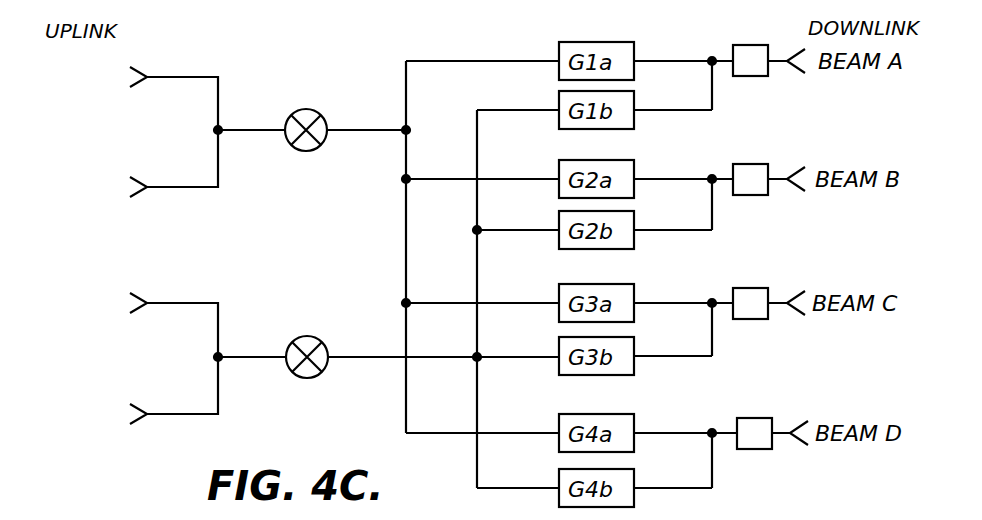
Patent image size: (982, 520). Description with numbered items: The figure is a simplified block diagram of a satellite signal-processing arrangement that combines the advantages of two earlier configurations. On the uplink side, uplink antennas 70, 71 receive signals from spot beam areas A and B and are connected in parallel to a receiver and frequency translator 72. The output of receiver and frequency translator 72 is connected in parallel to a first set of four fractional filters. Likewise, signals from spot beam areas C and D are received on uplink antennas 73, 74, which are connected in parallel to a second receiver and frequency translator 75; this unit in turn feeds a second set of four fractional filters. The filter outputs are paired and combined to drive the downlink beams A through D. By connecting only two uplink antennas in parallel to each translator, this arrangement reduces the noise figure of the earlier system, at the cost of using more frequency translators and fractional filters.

The uplink antenna 70 is at (138, 68).
The uplink antenna 71 is at (140, 178).
The receiver and frequency translator 72 is at (300, 109).
The uplink antenna 73 is at (133, 293).
The uplink antenna 74 is at (138, 405).
The receiver and frequency translator 75 is at (300, 336).